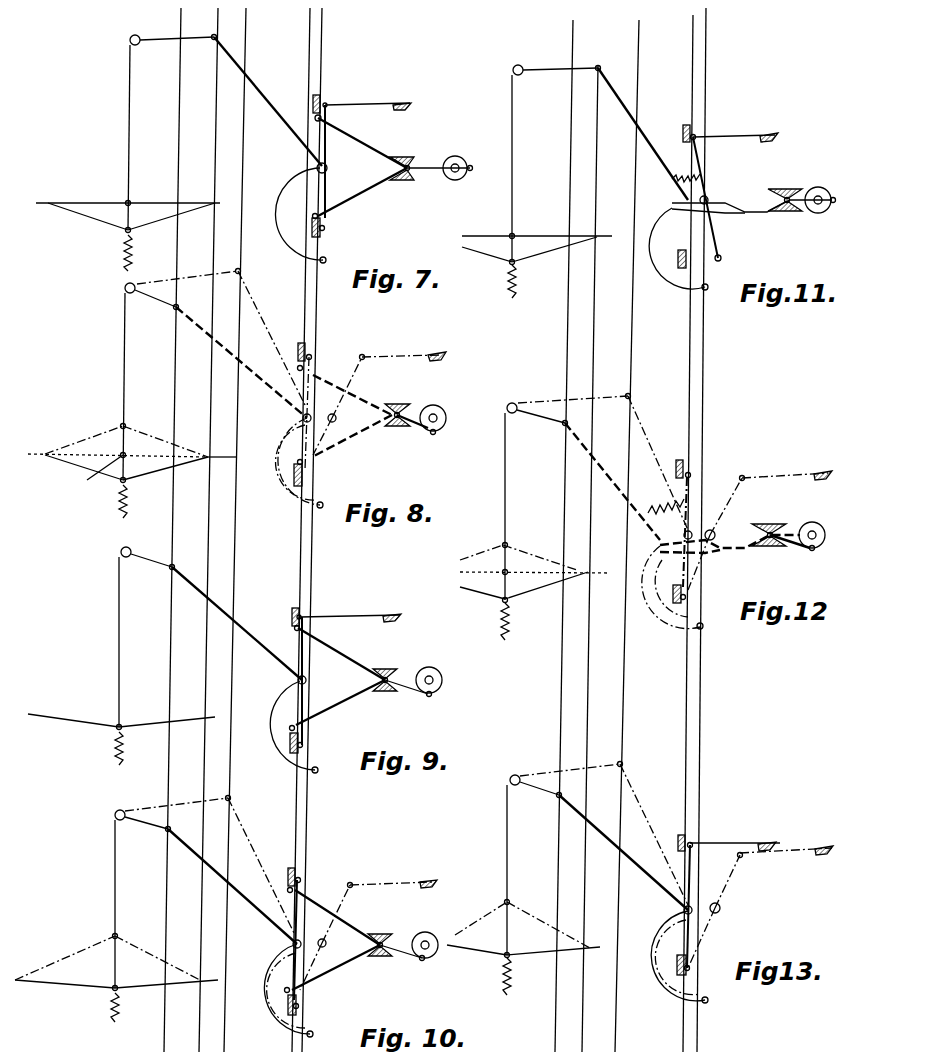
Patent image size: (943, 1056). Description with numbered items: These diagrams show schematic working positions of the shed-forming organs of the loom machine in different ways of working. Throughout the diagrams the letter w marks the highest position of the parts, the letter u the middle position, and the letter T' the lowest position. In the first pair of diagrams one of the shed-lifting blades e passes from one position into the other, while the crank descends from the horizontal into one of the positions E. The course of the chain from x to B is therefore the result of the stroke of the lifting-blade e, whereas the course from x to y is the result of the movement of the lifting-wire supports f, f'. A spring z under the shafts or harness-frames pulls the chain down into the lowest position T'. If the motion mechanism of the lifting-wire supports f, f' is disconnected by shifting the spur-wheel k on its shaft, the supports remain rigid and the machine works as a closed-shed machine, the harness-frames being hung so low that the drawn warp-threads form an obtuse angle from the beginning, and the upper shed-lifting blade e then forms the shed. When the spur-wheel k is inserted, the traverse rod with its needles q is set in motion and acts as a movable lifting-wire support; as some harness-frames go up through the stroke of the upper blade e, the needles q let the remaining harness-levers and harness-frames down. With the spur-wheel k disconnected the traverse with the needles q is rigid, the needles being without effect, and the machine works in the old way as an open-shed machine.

In FIG. 7, the weighing lever / beam w is at (328, 14).
In FIG. 8, the weighing lever / beam w is at (143, 432).
In FIG. 10, the weighing lever / beam w is at (226, 898).
In FIG. 11, the weighing lever / beam w is at (733, 132).
In FIG. 12, the weighing lever / beam w is at (522, 557).
In FIG. 7, the upper stop f is at (306, 104).
In FIG. 7, the lower stop f' is at (325, 234).
In FIG. 8, the lower stop f' is at (315, 478).
In FIG. 7, the arm e is at (403, 101).
In FIG. 8, the arm e is at (389, 385).
In FIG. 9, the arm e is at (350, 634).
In FIG. 11, the arm e is at (726, 192).
In FIG. 12, the arm e is at (717, 466).
In FIG. 7, the lever T' is at (291, 18).
In FIG. 8, the lever T' is at (202, 439).
In FIG. 9, the lever T' is at (160, 655).
In FIG. 10, the lever T' is at (227, 940).
In FIG. 12, the lever T' is at (543, 540).
In FIG. 8, the parallelogram linkage B is at (132, 441).
In FIG. 8, the link x is at (94, 474).
In FIG. 8, the spring y is at (142, 510).
In FIG. 8, the spring attachment z is at (114, 516).
In FIG. 8, the roller E is at (421, 435).
In FIG. 11, the hook link q is at (742, 204).
In FIG. 12, the hook link q is at (658, 546).
In FIG. 11, the roller k is at (819, 189).
In FIG. 12, the roller k is at (808, 522).
In FIG. 11, the pivot u is at (817, 228).